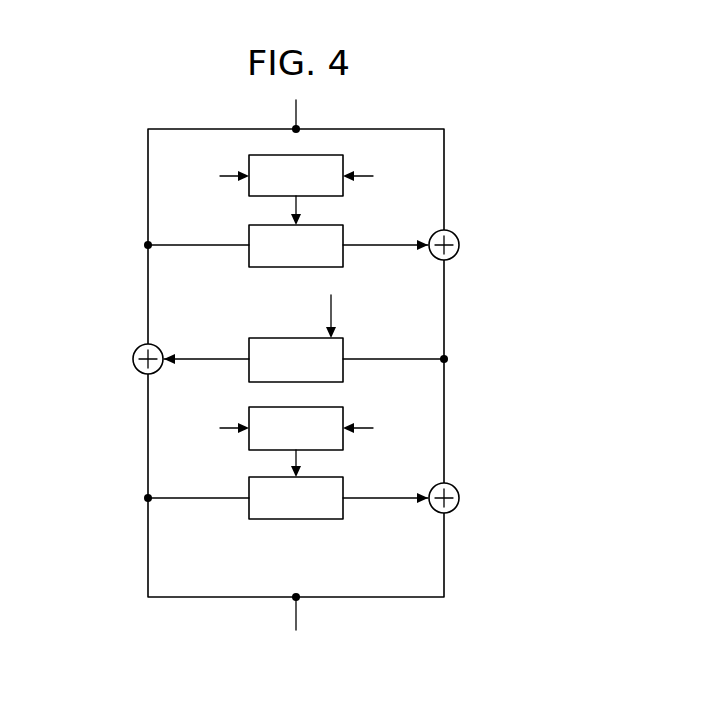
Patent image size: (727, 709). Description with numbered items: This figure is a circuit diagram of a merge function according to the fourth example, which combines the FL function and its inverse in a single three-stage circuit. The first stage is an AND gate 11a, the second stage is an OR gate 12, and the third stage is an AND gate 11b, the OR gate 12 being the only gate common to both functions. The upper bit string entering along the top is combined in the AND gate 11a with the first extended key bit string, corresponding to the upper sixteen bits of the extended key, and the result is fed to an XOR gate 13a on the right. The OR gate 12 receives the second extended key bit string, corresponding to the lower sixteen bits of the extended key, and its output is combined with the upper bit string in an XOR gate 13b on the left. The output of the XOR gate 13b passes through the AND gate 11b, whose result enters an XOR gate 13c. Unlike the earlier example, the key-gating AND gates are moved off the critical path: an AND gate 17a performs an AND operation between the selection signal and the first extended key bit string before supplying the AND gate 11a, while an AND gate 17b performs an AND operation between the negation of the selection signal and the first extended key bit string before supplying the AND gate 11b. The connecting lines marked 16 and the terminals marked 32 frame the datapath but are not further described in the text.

The AND gate 11a is at (249, 263).
The AND gate 11b is at (249, 516).
The OR gate 12 is at (251, 338).
The XOR gate 13a is at (459, 233).
The XOR gate 13b is at (140, 347).
The XOR gate 13c is at (457, 488).
The signal line 16 is at (152, 190).
The AND gate 17a is at (343, 159).
The AND gate 17b is at (343, 411).
The line 32 is at (302, 121).